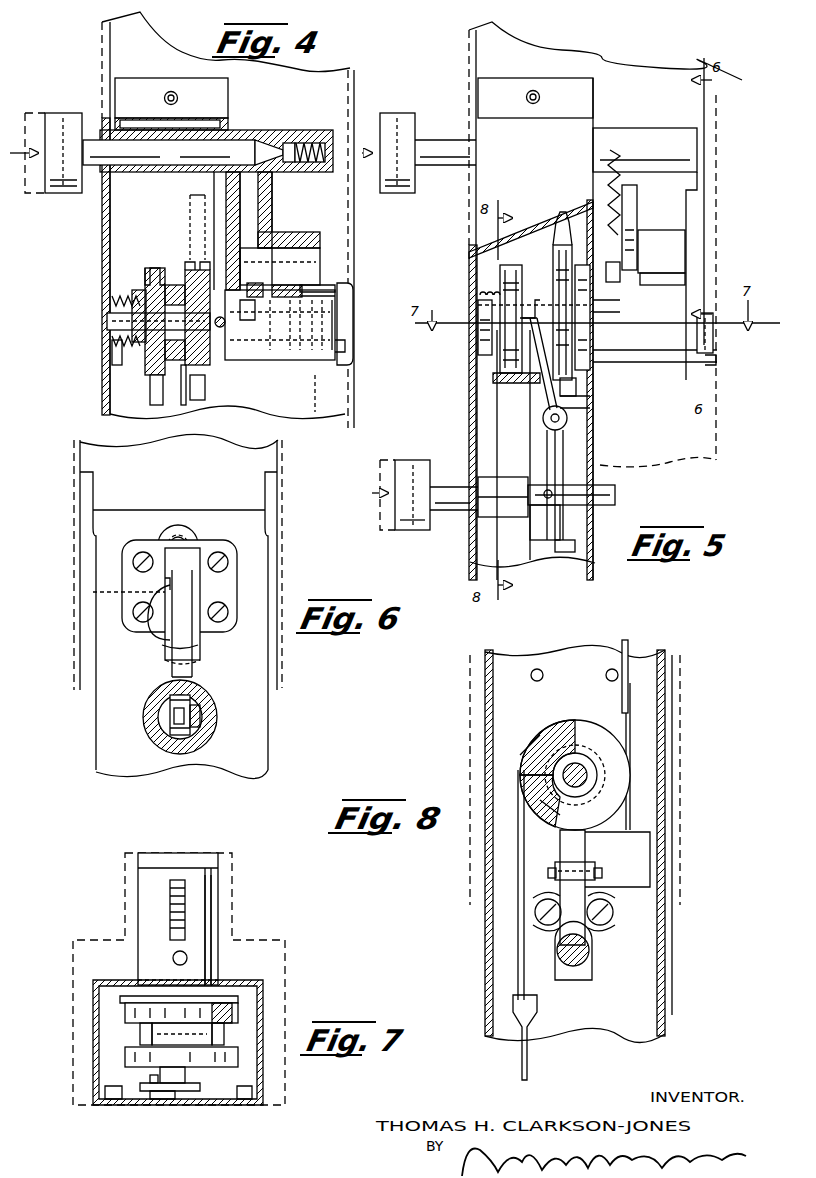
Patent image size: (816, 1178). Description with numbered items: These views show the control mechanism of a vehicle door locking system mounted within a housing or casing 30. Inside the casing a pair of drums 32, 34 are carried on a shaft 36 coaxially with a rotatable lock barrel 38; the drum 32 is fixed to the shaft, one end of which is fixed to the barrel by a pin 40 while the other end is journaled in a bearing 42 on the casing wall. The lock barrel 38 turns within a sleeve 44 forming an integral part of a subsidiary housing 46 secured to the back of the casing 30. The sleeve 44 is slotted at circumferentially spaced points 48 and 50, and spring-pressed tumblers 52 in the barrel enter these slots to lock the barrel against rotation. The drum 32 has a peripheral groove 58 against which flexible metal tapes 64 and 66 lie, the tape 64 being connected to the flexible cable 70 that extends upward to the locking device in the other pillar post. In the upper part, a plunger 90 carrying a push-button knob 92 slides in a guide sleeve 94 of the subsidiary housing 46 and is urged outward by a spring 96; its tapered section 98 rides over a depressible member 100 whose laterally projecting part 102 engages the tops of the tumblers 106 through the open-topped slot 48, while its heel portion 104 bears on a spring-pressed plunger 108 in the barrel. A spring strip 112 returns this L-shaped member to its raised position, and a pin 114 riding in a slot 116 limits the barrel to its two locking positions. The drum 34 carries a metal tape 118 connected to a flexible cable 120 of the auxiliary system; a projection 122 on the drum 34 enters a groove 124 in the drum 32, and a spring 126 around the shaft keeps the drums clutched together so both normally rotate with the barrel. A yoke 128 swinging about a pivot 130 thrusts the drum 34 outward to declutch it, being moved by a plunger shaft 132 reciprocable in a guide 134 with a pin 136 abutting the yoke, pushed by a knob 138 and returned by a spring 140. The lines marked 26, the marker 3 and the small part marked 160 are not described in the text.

In FIG. 4, the section reference 3 is at (335, 360).
In FIG. 4, the door panel 26 is at (100, 36).
In FIG. 5, the door panel 26 is at (466, 50).
In FIG. 6, the door panel 26 is at (66, 450).
In FIG. 7, the door panel 26 is at (122, 875).
In FIG. 8, the door panel 26 is at (696, 674).
In FIG. 4, the housing or casing 30 is at (100, 232).
In FIG. 5, the housing or casing 30 is at (531, 329).
In FIG. 6, the housing or casing 30 is at (92, 548).
In FIG. 7, the housing or casing 30 is at (115, 978).
In FIG. 8, the housing or casing 30 is at (485, 700).
In FIG. 4, the drum 32 is at (186, 268).
In FIG. 7, the drum 32 is at (118, 998).
In FIG. 4, the drum 34 is at (146, 270).
In FIG. 5, the drum 34 is at (470, 252).
In FIG. 7, the drum 34 is at (125, 1058).
In FIG. 8, the drum 34 is at (582, 735).
In FIG. 4, the shaft 36 is at (105, 318).
In FIG. 7, the shaft 36 is at (178, 1085).
In FIG. 4, the lock barrel 38 is at (316, 412).
In FIG. 4, the pin 40 is at (226, 326).
In FIG. 4, the bearing 42 is at (108, 340).
In FIG. 7, the bearing 42 is at (170, 1100).
In FIG. 4, the sleeve 44 is at (280, 325).
In FIG. 5, the sleeve 44 is at (655, 346).
In FIG. 6, the sleeve 44 is at (148, 738).
In FIG. 7, the sleeve 44 is at (138, 916).
In FIG. 4, the subsidiary housing 46 is at (275, 205).
In FIG. 5, the subsidiary housing 46 is at (620, 172).
In FIG. 6, the subsidiary housing 46 is at (200, 596).
In FIG. 6, the slot 48 is at (195, 696).
In FIG. 7, the slot 48 is at (185, 898).
In FIG. 6, the slot 50 is at (205, 715).
In FIG. 6, the tumblers or locking elements 52 is at (195, 725).
In FIG. 4, the peripheral groove 58 is at (190, 270).
In FIG. 4, the flexible metal strip or tape 64 is at (185, 232).
In FIG. 5, the flexible metal strip or tape 64 is at (562, 222).
In FIG. 7, the flexible metal strip or tape 64 is at (232, 1013).
In FIG. 8, the flexible metal strip or tape 64 is at (632, 724).
In FIG. 4, the flexible metal strip or tape 66 is at (200, 400).
In FIG. 5, the flexible metal strip or tape 66 is at (578, 388).
In FIG. 7, the flexible metal strip or tape 66 is at (190, 1012).
In FIG. 8, the flexible cable 70 is at (628, 645).
In FIG. 4, the plunger 90 is at (98, 140).
In FIG. 5, the plunger 90 is at (440, 138).
In FIG. 6, the plunger 90 is at (178, 527).
In FIG. 4, the manual control knob 92 is at (58, 192).
In FIG. 5, the manual control knob 92 is at (398, 112).
In FIG. 4, the sleeve 94 is at (135, 175).
In FIG. 4, the spring 96 is at (310, 143).
In FIG. 4, the tapered section 98 is at (270, 140).
In FIG. 6, the tapered section 98 is at (195, 525).
In FIG. 4, the depressible member 100 is at (242, 188).
In FIG. 6, the depressible member 100 is at (90, 592).
In FIG. 4, the laterally projecting part 102 is at (310, 282).
In FIG. 5, the laterally projecting part 102 is at (680, 245).
In FIG. 6, the laterally projecting part 102 is at (170, 672).
In FIG. 4, the heel portion 104 is at (290, 248).
In FIG. 5, the heel portion 104 is at (675, 280).
In FIG. 4, the tumblers 106 is at (300, 296).
In FIG. 7, the tumblers 106 is at (180, 880).
In FIG. 4, the spring-pressed plunger 108 is at (255, 310).
In FIG. 5, the spring-pressed plunger 108 is at (620, 280).
In FIG. 7, the spring-pressed plunger 108 is at (185, 955).
In FIG. 4, the spring strip 112 is at (262, 283).
In FIG. 5, the spring strip 112 is at (637, 195).
In FIG. 6, the spring strip 112 is at (150, 648).
In FIG. 4, the pin 114 is at (347, 345).
In FIG. 5, the pin 114 is at (716, 362).
In FIG. 4, the slot 116 is at (345, 302).
In FIG. 5, the slot 116 is at (713, 340).
In FIG. 4, the metal tape 118 is at (152, 404).
In FIG. 5, the metal tape 118 is at (512, 390).
In FIG. 7, the metal tape 118 is at (130, 1068).
In FIG. 8, the metal tape 118 is at (516, 838).
In FIG. 8, the flexible cable 120 is at (528, 1066).
In FIG. 5, the projection 122 is at (530, 300).
In FIG. 7, the projection 122 is at (160, 1040).
In FIG. 5, the groove 124 is at (592, 306).
In FIG. 7, the groove 124 is at (140, 1030).
In FIG. 4, the spring 126 is at (128, 358).
In FIG. 5, the spring 126 is at (478, 345).
In FIG. 7, the spring 126 is at (155, 1094).
In FIG. 4, the yoke 128 is at (183, 405).
In FIG. 5, the yoke 128 is at (590, 402).
In FIG. 7, the yoke 128 is at (224, 1034).
In FIG. 8, the yoke 128 is at (590, 858).
In FIG. 5, the pivot 130 is at (568, 418).
In FIG. 8, the pivot 130 is at (600, 880).
In FIG. 5, the plunger shaft 132 is at (445, 485).
In FIG. 8, the plunger shaft 132 is at (574, 966).
In FIG. 5, the guide 134 is at (488, 517).
In FIG. 8, the guide 134 is at (592, 970).
In FIG. 5, the pin 136 is at (548, 498).
In FIG. 5, the knob 138 is at (422, 450).
In FIG. 5, the spring 140 is at (615, 490).
In FIG. 5, the stop 160 is at (574, 552).